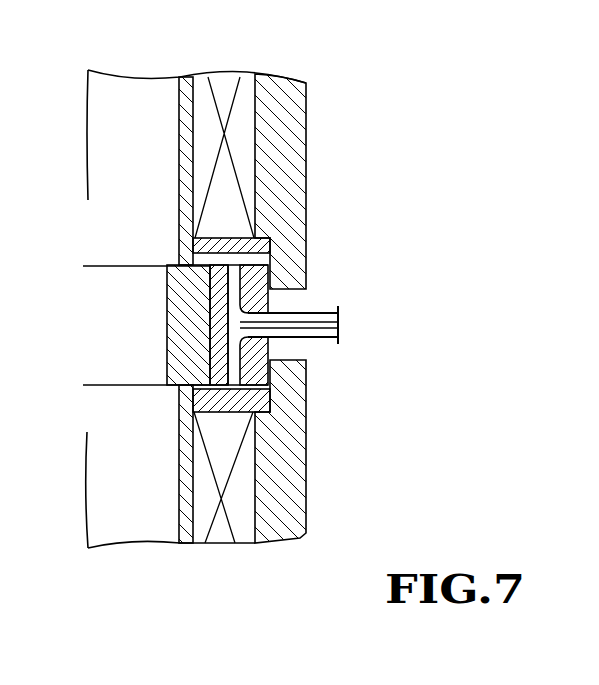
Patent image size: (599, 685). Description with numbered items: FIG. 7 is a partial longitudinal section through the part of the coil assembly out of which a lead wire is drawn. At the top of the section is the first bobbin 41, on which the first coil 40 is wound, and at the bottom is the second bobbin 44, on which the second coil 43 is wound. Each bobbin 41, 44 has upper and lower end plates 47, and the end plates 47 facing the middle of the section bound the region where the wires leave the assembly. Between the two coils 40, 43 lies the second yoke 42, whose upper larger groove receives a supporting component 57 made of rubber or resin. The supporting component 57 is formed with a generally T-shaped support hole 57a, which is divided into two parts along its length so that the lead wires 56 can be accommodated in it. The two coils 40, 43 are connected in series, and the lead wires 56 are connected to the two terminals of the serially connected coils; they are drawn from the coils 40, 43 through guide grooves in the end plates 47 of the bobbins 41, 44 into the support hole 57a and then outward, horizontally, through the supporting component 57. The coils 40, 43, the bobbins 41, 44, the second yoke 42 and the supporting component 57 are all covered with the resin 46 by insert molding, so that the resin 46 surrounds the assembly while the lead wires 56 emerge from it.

The first coil 40 is at (242, 127).
The first bobbin 41 is at (195, 98).
The second yoke 42 is at (130, 265).
The second coil 43 is at (243, 474).
The second bobbin 44 is at (194, 483).
The resin 46 is at (307, 510).
The end plate 47 is at (270, 247).
The lead wire 56 is at (318, 313).
The supporting component 57 is at (270, 347).
The support hole 57a is at (212, 346).